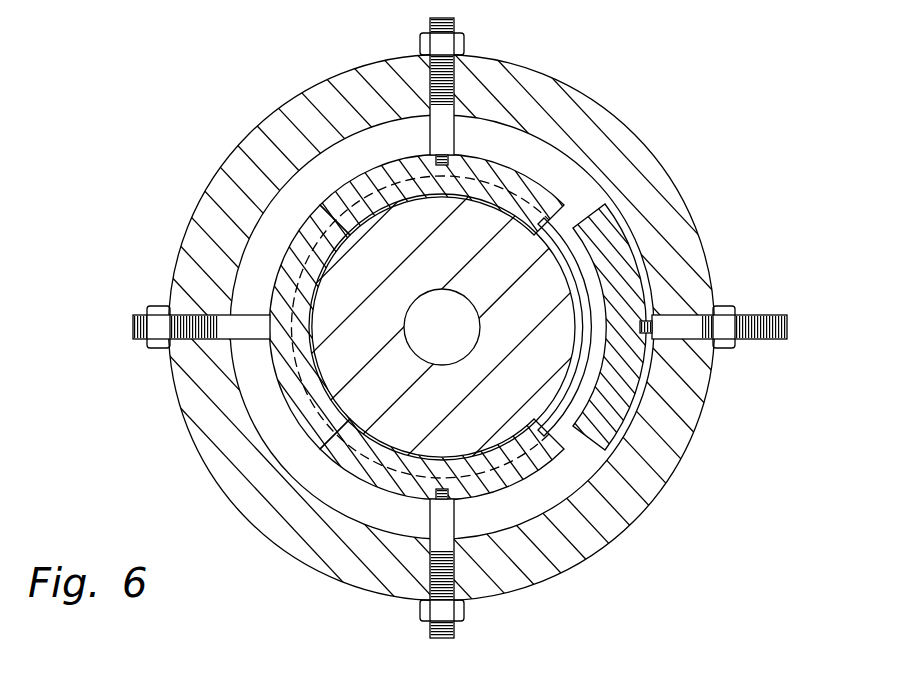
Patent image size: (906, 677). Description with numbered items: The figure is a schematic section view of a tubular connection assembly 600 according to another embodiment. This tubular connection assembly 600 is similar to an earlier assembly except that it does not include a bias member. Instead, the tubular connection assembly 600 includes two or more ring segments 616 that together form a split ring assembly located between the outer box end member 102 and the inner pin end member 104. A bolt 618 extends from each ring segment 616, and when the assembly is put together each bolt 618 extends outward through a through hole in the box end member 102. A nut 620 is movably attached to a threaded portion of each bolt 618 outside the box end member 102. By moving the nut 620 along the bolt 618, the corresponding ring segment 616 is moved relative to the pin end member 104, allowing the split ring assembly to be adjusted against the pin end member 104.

The tubular connection assembly 600 is at (197, 107).
The box end member 102 is at (635, 141).
The pin end member 104 is at (338, 367).
The ring segment 616 is at (350, 190).
The bolt 618 is at (430, 23).
The nut 620 is at (464, 40).